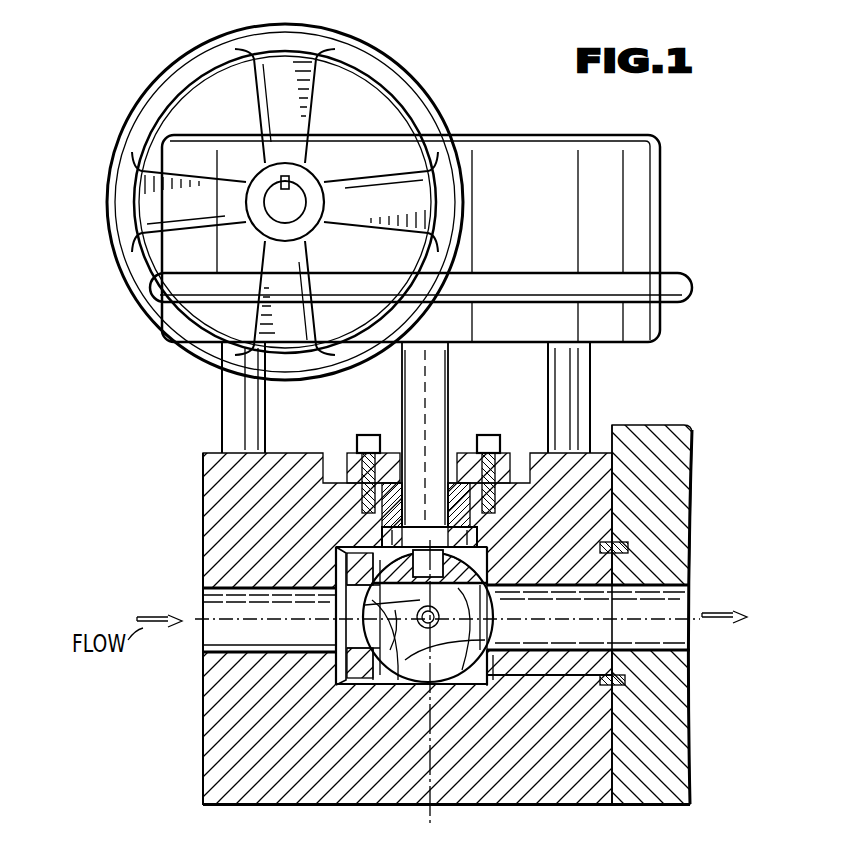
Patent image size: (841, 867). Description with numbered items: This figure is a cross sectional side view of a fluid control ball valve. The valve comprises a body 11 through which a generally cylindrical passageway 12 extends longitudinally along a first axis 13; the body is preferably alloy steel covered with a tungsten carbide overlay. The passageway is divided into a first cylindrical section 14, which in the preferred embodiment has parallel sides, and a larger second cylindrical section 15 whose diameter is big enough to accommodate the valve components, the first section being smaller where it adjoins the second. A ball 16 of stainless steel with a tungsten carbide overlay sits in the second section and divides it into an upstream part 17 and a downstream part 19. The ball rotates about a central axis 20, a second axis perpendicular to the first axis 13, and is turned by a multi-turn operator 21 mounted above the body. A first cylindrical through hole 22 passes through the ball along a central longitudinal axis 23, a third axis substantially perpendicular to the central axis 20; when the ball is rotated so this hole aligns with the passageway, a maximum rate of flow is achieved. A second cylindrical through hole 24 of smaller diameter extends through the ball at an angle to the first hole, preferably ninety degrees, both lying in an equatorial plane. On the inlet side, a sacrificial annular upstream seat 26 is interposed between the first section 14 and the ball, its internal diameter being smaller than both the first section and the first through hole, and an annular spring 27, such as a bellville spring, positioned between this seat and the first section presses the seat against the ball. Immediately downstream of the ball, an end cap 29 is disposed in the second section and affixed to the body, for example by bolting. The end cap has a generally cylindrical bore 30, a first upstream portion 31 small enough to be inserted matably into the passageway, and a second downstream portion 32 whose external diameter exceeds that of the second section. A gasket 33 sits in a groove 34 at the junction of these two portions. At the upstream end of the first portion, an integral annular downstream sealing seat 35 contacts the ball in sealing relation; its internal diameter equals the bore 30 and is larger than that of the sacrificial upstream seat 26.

The body 11 is at (205, 785).
The passageway 12 is at (265, 643).
The first axis 13 is at (195, 619).
The first cylindrical section 14 is at (203, 598).
The second cylindrical section 15 is at (372, 688).
The ball 16 is at (448, 688).
The upstream part 17 is at (375, 543).
The downstream part 19 is at (465, 455).
The central axis 20 is at (422, 815).
The multi-turn operator 21 is at (640, 231).
The first cylindrical through hole 22 is at (395, 688).
The central longitudinal axis 23 is at (565, 690).
The second cylindrical through hole 24 is at (520, 545).
The sacrificial annular upstream seat 26 is at (340, 688).
The annular spring 27 is at (340, 690).
The end cap 29 is at (672, 804).
The bore 30 is at (675, 600).
The first upstream portion 31 is at (530, 688).
The second downstream portion 32 is at (677, 752).
The gasket 33 is at (622, 685).
The groove 34 is at (623, 690).
The downstream sealing seat 35 is at (496, 688).